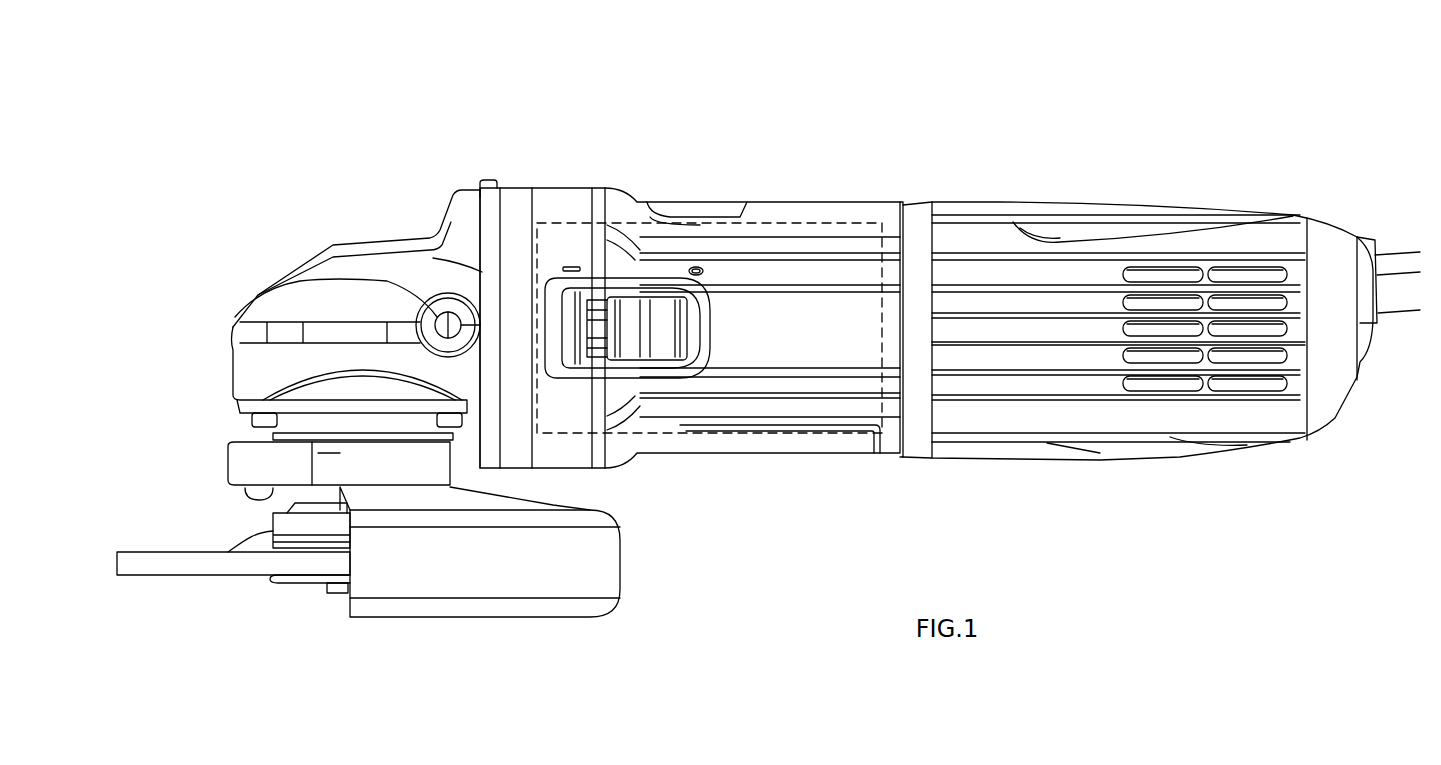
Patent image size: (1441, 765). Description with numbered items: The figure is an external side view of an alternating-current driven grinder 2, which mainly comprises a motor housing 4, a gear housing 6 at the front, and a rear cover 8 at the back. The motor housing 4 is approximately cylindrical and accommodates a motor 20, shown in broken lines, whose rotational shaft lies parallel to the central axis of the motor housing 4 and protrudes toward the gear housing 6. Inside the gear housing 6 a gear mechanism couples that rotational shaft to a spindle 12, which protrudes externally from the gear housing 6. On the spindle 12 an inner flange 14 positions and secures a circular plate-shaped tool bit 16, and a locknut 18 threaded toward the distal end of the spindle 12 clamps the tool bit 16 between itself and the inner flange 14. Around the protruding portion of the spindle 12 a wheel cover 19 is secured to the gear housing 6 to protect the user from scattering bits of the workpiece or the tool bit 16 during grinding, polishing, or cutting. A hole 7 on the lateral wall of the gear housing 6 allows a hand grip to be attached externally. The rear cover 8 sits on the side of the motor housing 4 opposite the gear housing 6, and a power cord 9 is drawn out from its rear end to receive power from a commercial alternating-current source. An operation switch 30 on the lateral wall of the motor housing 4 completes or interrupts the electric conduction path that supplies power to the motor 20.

The grinder 2 is at (935, 92).
The motor housing 4 is at (777, 214).
The gear housing 6 is at (440, 252).
The hole 7 is at (444, 323).
The rear cover 8 is at (1045, 228).
The power cord 9 is at (1395, 267).
The spindle 12 is at (340, 587).
The inner flange 14 is at (287, 527).
The tool bit 16 is at (227, 565).
The locknut 18 is at (305, 578).
The wheel cover 19 is at (595, 563).
The motor 20 is at (848, 222).
The operation switch 30 is at (648, 313).